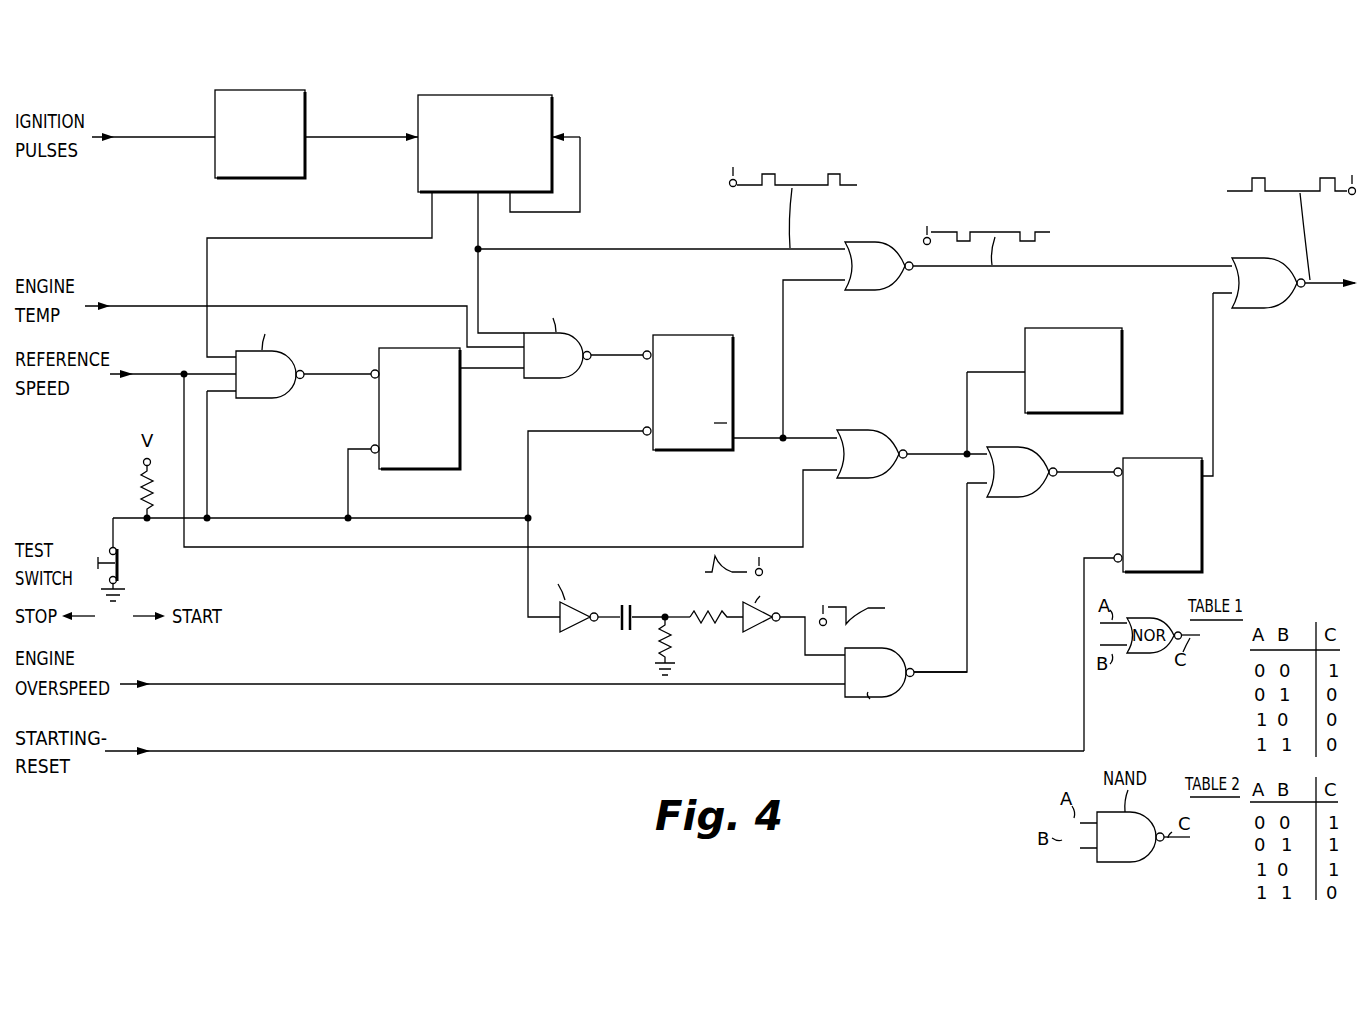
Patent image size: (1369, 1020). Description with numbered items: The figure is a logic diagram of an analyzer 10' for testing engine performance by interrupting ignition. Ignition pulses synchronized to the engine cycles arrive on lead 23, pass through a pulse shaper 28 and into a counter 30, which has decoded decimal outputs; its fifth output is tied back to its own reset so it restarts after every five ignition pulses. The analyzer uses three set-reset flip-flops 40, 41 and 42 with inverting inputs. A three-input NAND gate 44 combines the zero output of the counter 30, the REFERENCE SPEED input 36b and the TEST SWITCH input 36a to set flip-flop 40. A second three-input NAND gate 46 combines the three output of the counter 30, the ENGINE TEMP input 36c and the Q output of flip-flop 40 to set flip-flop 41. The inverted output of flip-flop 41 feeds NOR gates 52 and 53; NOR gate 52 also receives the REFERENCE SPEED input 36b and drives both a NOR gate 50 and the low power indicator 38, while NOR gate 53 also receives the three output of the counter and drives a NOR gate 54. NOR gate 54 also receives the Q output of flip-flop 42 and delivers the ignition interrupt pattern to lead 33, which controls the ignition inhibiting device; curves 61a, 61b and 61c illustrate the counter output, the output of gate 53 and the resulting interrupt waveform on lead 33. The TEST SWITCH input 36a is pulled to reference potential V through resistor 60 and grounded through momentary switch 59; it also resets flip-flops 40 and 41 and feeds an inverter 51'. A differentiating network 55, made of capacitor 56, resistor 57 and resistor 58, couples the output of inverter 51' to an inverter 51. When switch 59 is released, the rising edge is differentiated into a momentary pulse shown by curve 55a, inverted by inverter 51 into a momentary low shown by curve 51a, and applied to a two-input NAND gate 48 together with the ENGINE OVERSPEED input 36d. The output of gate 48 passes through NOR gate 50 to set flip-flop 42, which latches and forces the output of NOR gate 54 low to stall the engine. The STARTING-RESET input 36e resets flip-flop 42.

The analyzer 10' is at (345, 784).
The lead 23 is at (129, 135).
The pulse shaper 28 is at (258, 93).
The counter 30 is at (490, 94).
The lead 33 is at (1330, 280).
The TEST SWITCH input 36a is at (113, 518).
The REFERENCE SPEED input 36b is at (155, 372).
The ENGINE TEMP input 36c is at (147, 305).
The ENGINE OVERSPEED input 36d is at (247, 686).
The STARTING-RESET input 36e is at (235, 753).
The low power indicator 38 is at (1093, 328).
The flip-flop 40 is at (455, 440).
The flip-flop 41 is at (708, 463).
The flip-flop 42 is at (1210, 540).
The three-input NAND gate 44 is at (283, 400).
The three-input NAND gate 46 is at (568, 378).
The two-input NAND gate 48 is at (898, 655).
The NOR gate 50 is at (1020, 495).
The inverter 51 is at (794, 619).
The inverter 51' is at (581, 612).
The curve 51a is at (840, 605).
The NOR gate 52 is at (887, 480).
The NOR gate 53 is at (893, 293).
The NOR gate 54 is at (1258, 258).
The differentiating network 55 is at (646, 630).
The curve 55a is at (683, 614).
The capacitor 56 is at (630, 604).
The resistor 57 is at (676, 650).
The resistor 58 is at (710, 620).
The switch 59 is at (126, 568).
The resistor 60 is at (138, 487).
The curve 61a is at (858, 184).
The curve 61b is at (1050, 236).
The curve 61c is at (1232, 190).